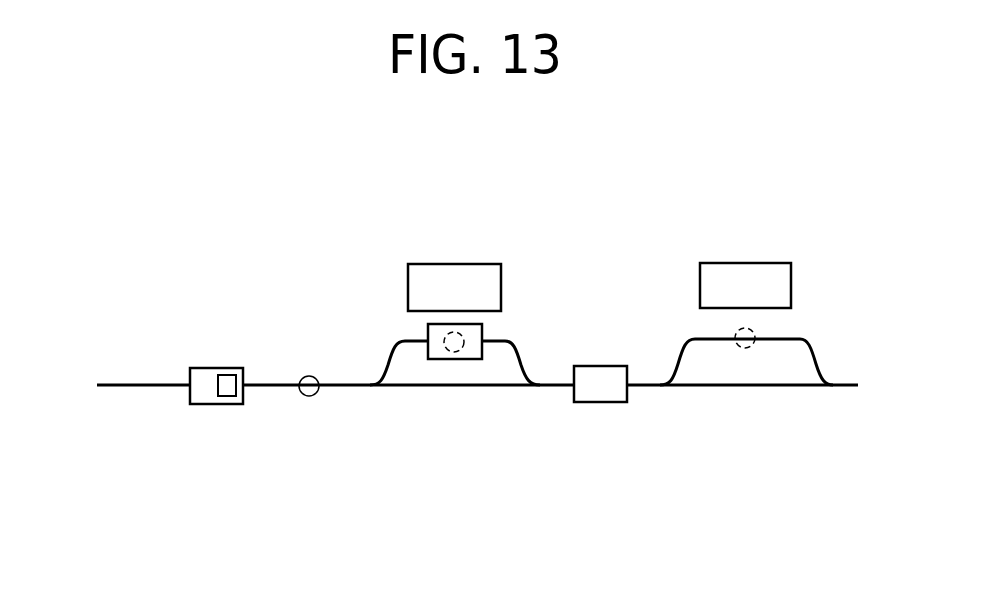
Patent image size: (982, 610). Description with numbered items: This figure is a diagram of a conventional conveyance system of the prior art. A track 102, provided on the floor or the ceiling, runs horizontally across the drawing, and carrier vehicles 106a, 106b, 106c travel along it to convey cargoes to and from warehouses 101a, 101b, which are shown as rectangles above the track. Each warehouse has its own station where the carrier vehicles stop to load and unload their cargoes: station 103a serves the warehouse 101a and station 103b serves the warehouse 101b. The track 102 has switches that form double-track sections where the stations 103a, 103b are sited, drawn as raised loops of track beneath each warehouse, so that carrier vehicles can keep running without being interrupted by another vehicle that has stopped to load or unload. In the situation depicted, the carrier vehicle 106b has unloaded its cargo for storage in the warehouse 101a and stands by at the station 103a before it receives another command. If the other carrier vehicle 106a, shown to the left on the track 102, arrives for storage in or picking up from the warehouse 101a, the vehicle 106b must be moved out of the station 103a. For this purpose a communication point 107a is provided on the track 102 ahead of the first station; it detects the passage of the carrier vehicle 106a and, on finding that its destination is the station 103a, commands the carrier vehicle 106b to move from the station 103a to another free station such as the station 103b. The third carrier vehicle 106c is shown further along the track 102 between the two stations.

The warehouse 101a is at (453, 277).
The warehouse 101b is at (742, 278).
The track 102 is at (150, 385).
The station 103a is at (447, 350).
The station 103b is at (752, 347).
The carrier vehicle 106a is at (203, 392).
The carrier vehicle 106b is at (468, 350).
The carrier vehicle 106c is at (606, 396).
The communication point 107a is at (305, 376).